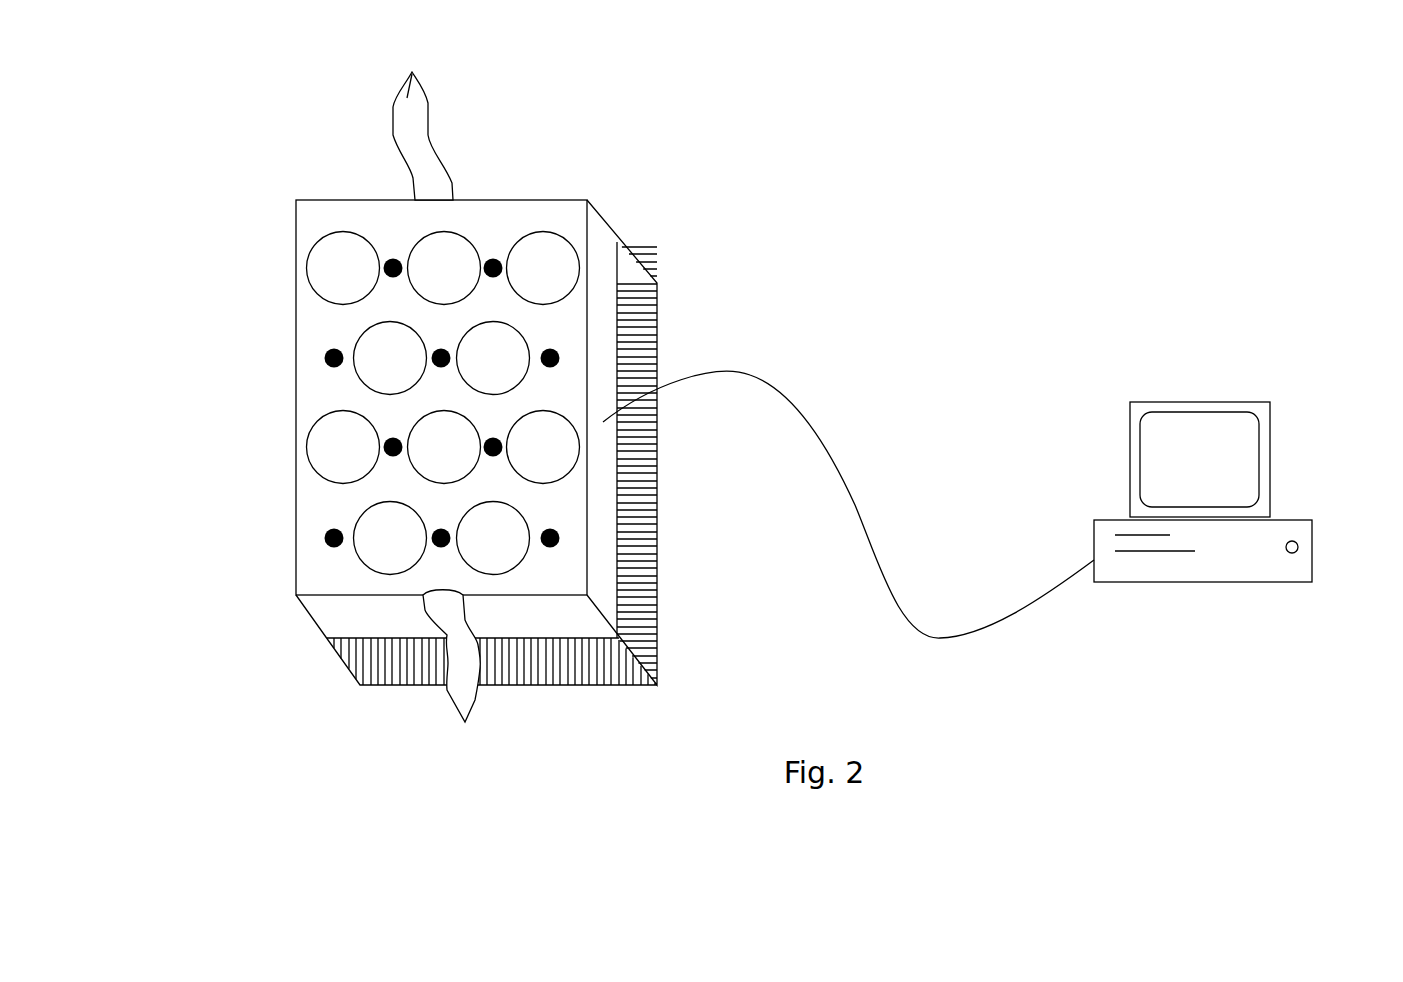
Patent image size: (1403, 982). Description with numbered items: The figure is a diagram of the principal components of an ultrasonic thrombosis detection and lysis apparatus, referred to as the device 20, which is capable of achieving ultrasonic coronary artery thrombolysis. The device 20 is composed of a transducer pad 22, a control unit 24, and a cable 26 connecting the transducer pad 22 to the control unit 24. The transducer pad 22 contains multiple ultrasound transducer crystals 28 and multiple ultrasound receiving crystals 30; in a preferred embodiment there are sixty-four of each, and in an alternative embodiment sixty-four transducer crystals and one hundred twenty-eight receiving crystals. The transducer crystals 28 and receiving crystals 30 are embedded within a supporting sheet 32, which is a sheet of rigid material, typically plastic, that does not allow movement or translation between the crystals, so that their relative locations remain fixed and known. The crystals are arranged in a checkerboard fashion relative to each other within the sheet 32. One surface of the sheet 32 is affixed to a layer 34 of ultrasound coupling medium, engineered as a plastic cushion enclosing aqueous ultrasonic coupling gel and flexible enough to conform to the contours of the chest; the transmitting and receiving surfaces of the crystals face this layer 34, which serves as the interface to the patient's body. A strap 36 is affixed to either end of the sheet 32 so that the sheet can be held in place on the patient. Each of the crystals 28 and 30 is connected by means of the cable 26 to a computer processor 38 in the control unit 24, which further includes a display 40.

The device 20 is at (858, 150).
The transducer pad 22 is at (610, 172).
The control unit 24 is at (1229, 445).
The cable 26 is at (853, 501).
The ultrasound transducer crystals 28 is at (333, 267).
The ultrasound receiving crystals 30 is at (333, 359).
The supporting sheet 32 is at (340, 630).
The layer of ultrasound coupling medium 34 is at (340, 662).
The strap 36 is at (410, 68).
The computer processor 38 is at (1213, 565).
The display 40 is at (1217, 425).